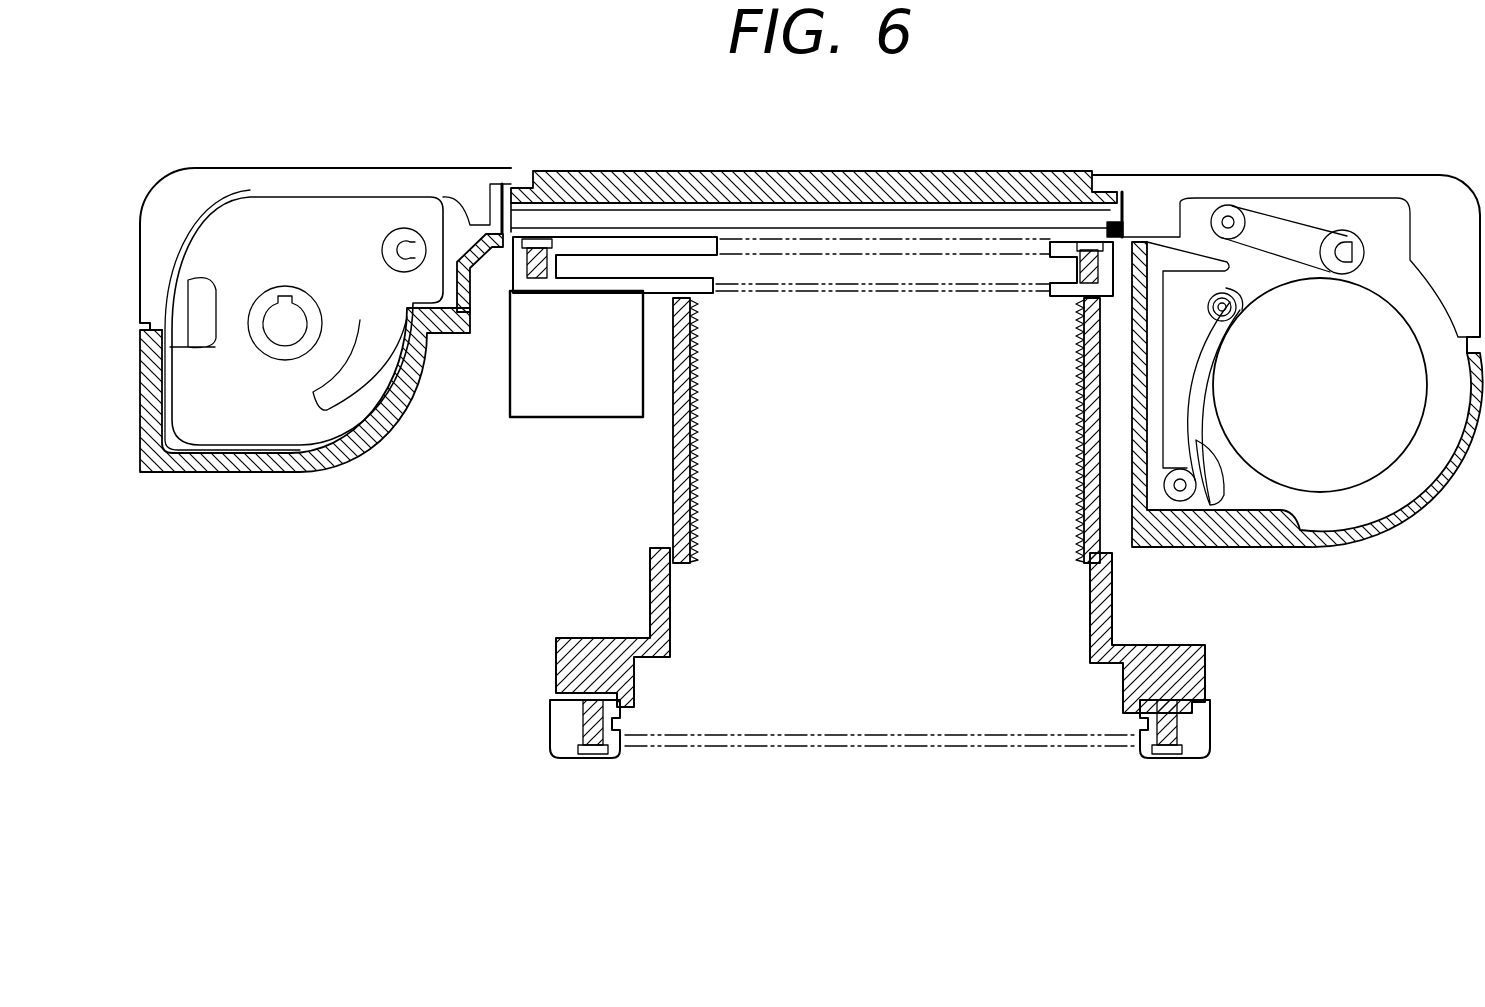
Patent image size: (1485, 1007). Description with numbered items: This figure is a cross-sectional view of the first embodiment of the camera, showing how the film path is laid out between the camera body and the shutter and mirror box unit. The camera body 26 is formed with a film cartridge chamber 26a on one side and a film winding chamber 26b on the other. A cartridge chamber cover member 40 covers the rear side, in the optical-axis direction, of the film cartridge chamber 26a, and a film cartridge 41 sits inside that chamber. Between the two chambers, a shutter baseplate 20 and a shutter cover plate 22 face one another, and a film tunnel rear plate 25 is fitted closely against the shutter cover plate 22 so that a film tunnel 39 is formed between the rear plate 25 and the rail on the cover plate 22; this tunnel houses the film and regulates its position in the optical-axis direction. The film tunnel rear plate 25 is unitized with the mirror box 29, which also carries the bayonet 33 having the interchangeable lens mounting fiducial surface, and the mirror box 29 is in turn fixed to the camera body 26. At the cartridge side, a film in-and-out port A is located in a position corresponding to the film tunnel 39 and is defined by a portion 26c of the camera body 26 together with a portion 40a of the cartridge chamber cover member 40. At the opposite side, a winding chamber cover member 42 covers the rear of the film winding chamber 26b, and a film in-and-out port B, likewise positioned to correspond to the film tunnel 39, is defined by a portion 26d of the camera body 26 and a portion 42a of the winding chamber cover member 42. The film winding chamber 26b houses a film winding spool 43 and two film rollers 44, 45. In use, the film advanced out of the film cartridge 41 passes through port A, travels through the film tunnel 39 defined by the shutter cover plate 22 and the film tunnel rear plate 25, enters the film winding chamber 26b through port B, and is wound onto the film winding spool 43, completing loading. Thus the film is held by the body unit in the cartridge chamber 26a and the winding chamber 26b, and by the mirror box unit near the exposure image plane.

The shutter baseplate 20 is at (1062, 296).
The shutter cover plate 22 is at (1052, 257).
The film tunnel rear plate 25 is at (750, 222).
The camera body 26 is at (858, 172).
The film cartridge chamber 26a is at (180, 438).
The film winding chamber 26b is at (1322, 518).
The portion of camera body 26c is at (489, 258).
The portion of camera body 26d is at (1078, 348).
The mirror box 29 is at (557, 664).
The bayonet 33 is at (558, 745).
The film tunnel 39 is at (654, 236).
The cartridge chamber cover member 40 is at (351, 168).
The portion of cartridge chamber cover member 40a is at (490, 185).
The film cartridge 41 is at (421, 208).
The winding chamber cover member 42 is at (1282, 175).
The portion of winding chamber cover member 42a is at (1149, 235).
The film winding spool 43 is at (1382, 474).
The film roller 44 is at (1298, 236).
The film roller 45 is at (1205, 447).
The film in-and-out port A is at (518, 280).
The film in-and-out port B is at (1104, 228).